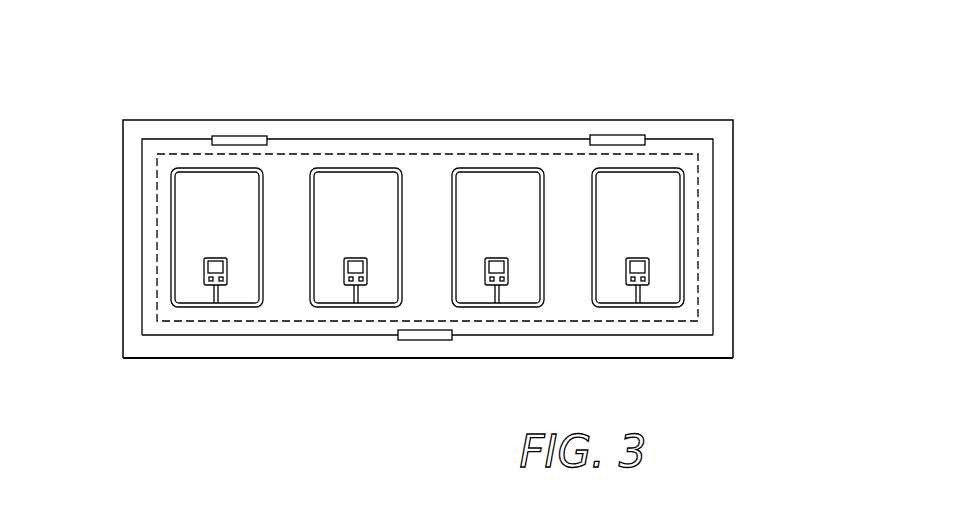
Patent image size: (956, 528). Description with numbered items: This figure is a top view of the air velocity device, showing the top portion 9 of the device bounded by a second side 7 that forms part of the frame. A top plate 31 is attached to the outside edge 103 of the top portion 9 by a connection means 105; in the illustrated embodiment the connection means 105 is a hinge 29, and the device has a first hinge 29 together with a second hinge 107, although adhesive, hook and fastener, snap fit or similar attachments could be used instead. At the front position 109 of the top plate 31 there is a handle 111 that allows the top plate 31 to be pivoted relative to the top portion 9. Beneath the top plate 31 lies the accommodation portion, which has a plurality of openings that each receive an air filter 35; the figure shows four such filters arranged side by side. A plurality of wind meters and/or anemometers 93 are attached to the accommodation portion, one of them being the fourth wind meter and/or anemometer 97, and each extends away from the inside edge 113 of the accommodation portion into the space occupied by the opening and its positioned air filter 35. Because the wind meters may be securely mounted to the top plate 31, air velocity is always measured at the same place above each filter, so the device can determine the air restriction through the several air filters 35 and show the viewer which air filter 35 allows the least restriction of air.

The second side 7 is at (737, 77).
The top portion 9 is at (713, 173).
The hinge 29 is at (618, 136).
The top plate 31 is at (698, 330).
The air filter 35 is at (378, 168).
The wind meter and/or anemometer 93 is at (204, 267).
The fourth wind meter and/or anemometer 97 is at (700, 223).
The outside edge 103 is at (122, 188).
The connection means 105 is at (268, 140).
The second hinge 107 is at (242, 107).
The front position 109 is at (225, 338).
The handle 111 is at (428, 340).
The inside edge 113 is at (344, 268).